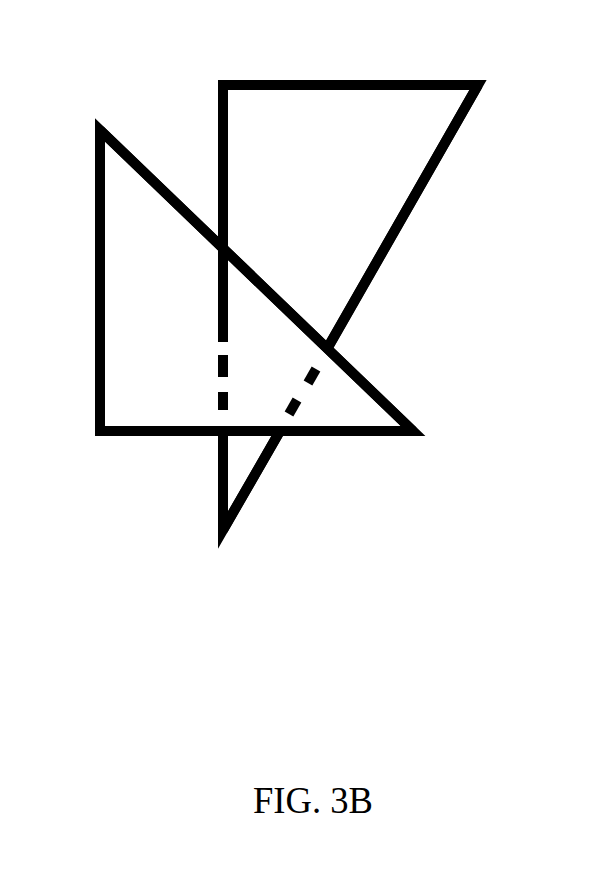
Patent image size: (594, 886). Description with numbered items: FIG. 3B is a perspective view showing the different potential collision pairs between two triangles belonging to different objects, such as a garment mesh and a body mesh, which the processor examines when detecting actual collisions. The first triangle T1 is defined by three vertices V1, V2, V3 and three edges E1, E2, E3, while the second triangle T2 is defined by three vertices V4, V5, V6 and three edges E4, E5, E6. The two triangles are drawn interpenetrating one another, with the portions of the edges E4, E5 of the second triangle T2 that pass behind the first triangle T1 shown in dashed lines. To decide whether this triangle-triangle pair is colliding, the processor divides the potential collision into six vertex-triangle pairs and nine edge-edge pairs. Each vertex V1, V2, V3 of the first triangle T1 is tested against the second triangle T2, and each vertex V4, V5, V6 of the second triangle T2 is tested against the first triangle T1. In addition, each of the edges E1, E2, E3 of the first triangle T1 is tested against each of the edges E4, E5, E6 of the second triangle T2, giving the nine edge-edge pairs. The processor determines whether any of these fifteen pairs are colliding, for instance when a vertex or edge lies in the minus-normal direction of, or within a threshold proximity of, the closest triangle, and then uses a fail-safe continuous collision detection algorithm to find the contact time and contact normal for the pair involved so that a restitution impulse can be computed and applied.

The vertex V1 is at (76, 104).
The vertex V2 is at (71, 464).
The vertex V3 is at (449, 437).
The vertex V4 is at (214, 51).
The vertex V5 is at (215, 566).
The vertex V6 is at (514, 54).
The edge E1 is at (70, 280).
The edge E2 is at (256, 472).
The edge E3 is at (256, 280).
The edge E4 is at (195, 307).
The edge E5 is at (350, 307).
The edge E6 is at (350, 55).
The triangle T1 is at (226, 322).
The triangle T2 is at (323, 277).